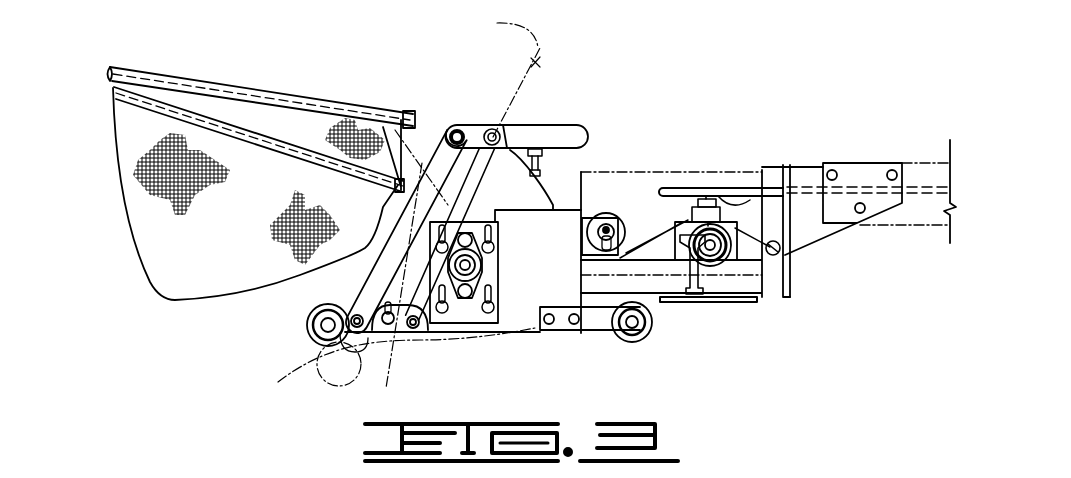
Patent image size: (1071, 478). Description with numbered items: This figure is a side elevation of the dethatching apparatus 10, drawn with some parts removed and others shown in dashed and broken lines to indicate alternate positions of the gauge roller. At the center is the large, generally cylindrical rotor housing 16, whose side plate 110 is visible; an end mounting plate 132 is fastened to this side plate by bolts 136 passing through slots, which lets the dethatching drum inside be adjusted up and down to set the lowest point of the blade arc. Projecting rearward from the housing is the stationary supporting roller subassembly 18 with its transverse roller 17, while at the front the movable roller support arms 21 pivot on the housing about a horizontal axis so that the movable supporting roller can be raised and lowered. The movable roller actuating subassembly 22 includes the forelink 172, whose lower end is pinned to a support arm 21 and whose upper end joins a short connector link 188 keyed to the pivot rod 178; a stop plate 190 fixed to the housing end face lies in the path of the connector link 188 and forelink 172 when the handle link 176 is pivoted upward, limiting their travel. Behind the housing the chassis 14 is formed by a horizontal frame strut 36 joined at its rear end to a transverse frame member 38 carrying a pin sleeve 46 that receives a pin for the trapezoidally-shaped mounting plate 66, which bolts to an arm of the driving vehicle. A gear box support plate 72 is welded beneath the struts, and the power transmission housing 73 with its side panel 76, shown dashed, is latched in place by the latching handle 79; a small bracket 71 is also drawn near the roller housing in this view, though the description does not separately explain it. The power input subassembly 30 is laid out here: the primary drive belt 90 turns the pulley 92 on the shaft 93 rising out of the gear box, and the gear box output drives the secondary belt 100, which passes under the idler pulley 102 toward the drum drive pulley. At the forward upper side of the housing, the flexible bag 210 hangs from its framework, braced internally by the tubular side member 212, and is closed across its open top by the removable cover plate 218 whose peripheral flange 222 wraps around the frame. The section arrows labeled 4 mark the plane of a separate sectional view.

The section line 4- 4 is at (750, 58).
The dethatching apparatus 10 is at (413, 62).
The chassis 14 is at (768, 307).
The rotor housing 16 is at (517, 312).
The roller 17 is at (620, 340).
The stationary supporting roller subassembly 18 is at (641, 355).
The movable roller support arms 21 is at (405, 305).
The movable roller actuating subassembly 22 is at (549, 92).
The power input subassembly 30 is at (700, 170).
The frame strut 36 is at (602, 280).
The transverse frame member 38 is at (777, 277).
The pin sleeve 46 is at (779, 207).
The trapezoidally-shaped mounting plate 66 is at (807, 233).
The support bracket 71 is at (700, 295).
The gear box support plate 72 is at (782, 250).
The power transmission housing 73 is at (607, 158).
The side panel 76 is at (623, 187).
The latching handle 79 is at (718, 285).
The primary drive belt 90 is at (918, 187).
The pulley 92 is at (720, 197).
The shaft 93 is at (753, 205).
The secondary belt 100 is at (649, 240).
The idler pulley 102 is at (617, 237).
The side plate 110 is at (500, 202).
The end mounting plate 132 is at (468, 313).
The bolts 136 is at (497, 247).
The forelink 172 is at (394, 124).
The handle link 176 is at (556, 125).
The pivot rod 178 is at (490, 123).
The connector link 188 is at (472, 125).
The stop plate 190 is at (541, 172).
The flexible bag 210 is at (178, 260).
The tubular side member 212 is at (250, 128).
The cover plate 218 is at (122, 67).
The peripheral flange 222 is at (196, 78).